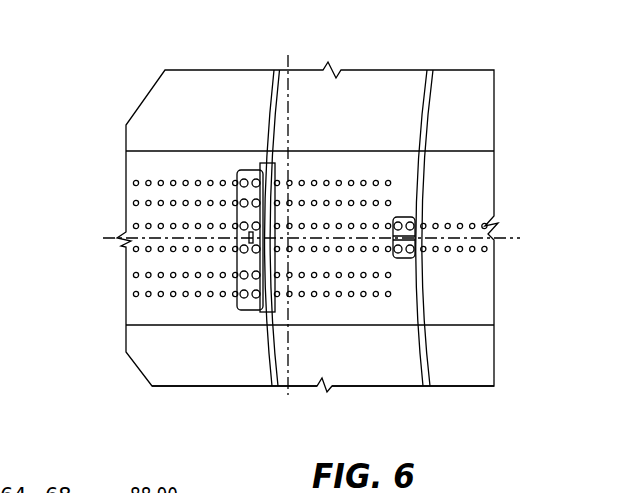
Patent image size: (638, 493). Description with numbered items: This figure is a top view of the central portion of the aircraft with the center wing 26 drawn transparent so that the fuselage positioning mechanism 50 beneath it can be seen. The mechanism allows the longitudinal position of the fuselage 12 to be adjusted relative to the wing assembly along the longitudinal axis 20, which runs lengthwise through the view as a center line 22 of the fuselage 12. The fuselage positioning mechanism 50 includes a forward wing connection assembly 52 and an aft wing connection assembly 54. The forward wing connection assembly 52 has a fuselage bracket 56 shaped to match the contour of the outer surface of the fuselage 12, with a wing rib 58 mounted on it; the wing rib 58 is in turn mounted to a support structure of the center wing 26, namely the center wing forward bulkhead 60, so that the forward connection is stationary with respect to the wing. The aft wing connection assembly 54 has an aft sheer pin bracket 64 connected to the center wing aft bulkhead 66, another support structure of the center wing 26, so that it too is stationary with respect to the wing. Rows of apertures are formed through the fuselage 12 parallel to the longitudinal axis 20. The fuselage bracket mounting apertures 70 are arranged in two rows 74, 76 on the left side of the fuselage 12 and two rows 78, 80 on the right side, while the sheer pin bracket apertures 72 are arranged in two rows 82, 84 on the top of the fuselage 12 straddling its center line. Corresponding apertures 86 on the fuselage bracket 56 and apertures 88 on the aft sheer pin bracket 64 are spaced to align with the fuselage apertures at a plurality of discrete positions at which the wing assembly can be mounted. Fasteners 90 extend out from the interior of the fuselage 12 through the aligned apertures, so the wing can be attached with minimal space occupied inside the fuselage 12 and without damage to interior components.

The fuselage 12 is at (455, 318).
The longitudinal axis 20 is at (500, 239).
The centerline 22 is at (289, 69).
The center wing 26 is at (347, 366).
The fuselage positioning mechanism 50 is at (178, 48).
The forward wing connection assembly 52 is at (248, 138).
The aft wing connection assembly 54 is at (402, 168).
The fuselage bracket 56 is at (255, 197).
The wing rib 58 is at (277, 303).
The center wing forward bulkhead 60 is at (277, 357).
The aft sheer pin bracket 64 is at (405, 220).
The center wing aft bulkhead 66 is at (420, 287).
The fuselage bracket mounting apertures 70 is at (198, 278).
The sheer pin bracket apertures 72 is at (472, 249).
The row 74 is at (118, 294).
The row 76 is at (118, 275).
The row 78 is at (118, 183).
The row 80 is at (118, 203).
The row 82 is at (118, 249).
The row 84 is at (118, 226).
The apertures 86 is at (256, 298).
The apertures 88 is at (399, 253).
The fasteners 90 is at (309, 303).